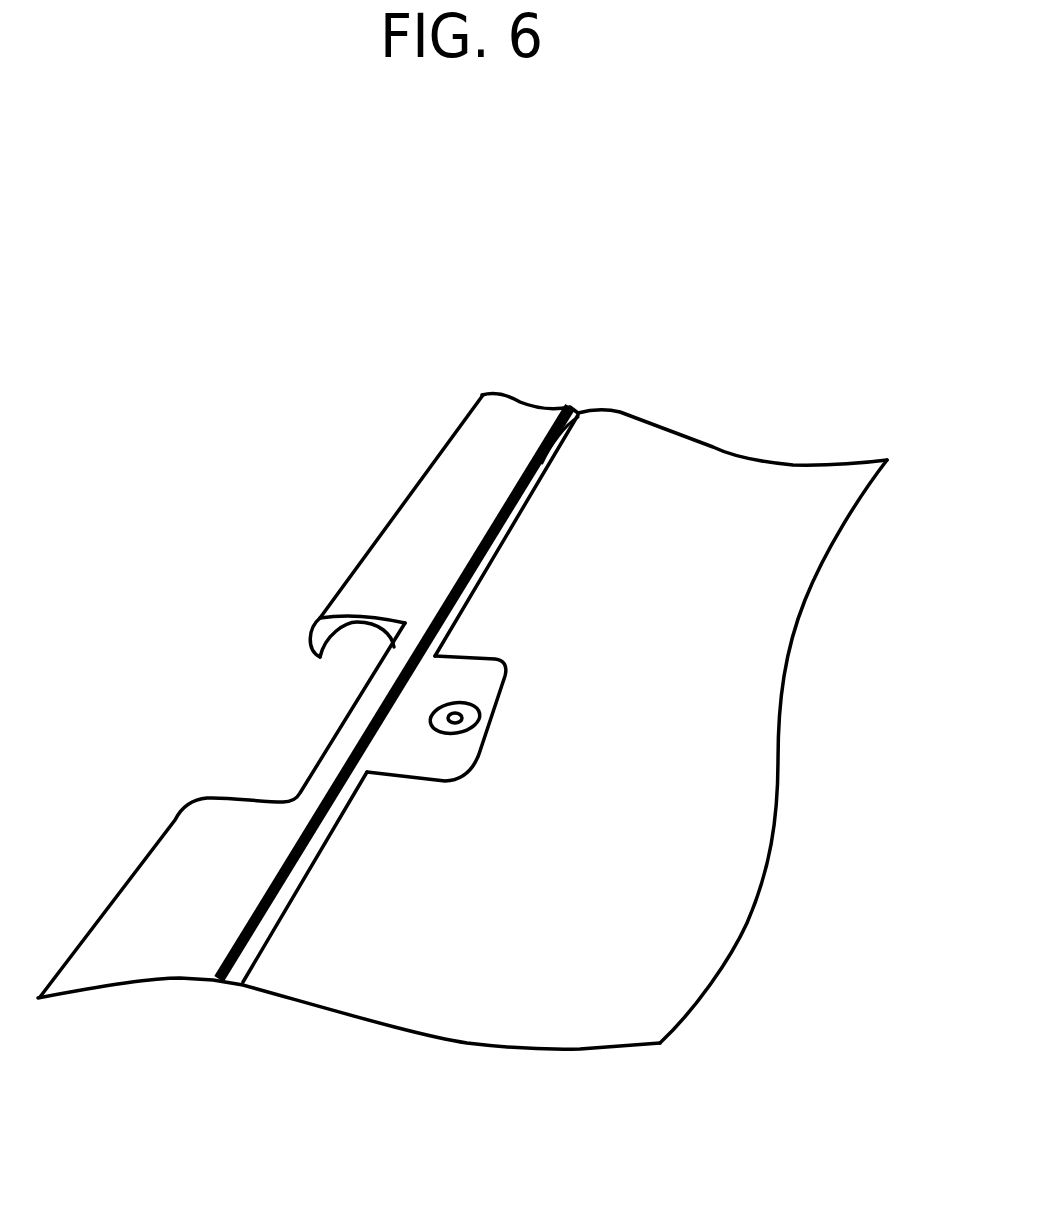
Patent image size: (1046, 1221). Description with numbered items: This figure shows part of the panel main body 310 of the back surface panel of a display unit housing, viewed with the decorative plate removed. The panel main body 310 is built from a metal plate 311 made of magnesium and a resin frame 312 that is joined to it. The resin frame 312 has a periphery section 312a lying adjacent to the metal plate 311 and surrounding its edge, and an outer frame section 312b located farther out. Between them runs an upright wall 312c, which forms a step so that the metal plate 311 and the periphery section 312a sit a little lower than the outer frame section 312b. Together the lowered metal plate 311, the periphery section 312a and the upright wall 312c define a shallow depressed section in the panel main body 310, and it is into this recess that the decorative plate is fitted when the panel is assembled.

The panel main body 310 is at (920, 203).
The metal plate 311 is at (753, 490).
The resin frame 312 is at (443, 263).
The periphery section 312a is at (573, 412).
The outer frame section 312b is at (497, 417).
The upright wall 312c is at (542, 443).